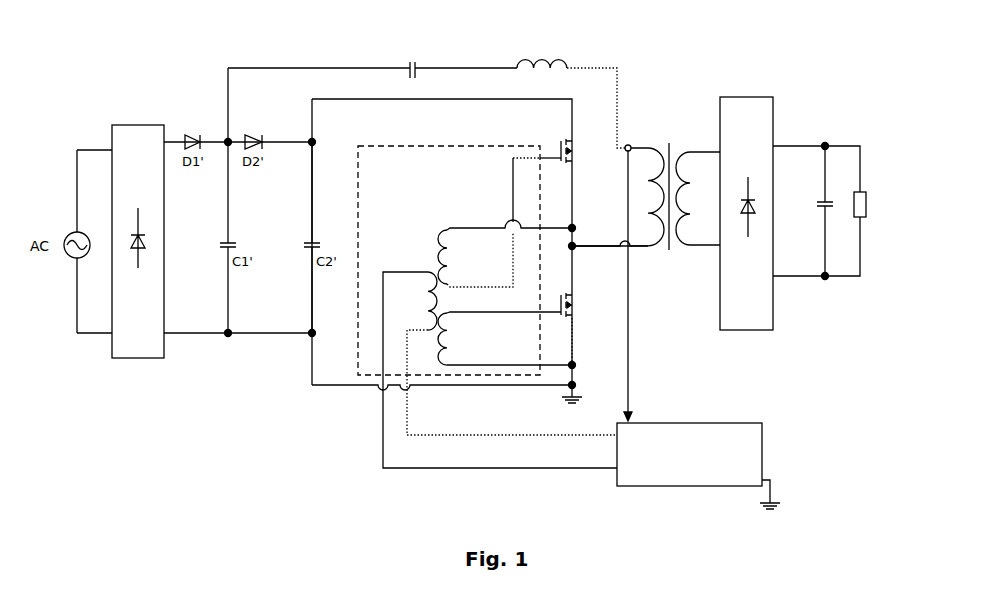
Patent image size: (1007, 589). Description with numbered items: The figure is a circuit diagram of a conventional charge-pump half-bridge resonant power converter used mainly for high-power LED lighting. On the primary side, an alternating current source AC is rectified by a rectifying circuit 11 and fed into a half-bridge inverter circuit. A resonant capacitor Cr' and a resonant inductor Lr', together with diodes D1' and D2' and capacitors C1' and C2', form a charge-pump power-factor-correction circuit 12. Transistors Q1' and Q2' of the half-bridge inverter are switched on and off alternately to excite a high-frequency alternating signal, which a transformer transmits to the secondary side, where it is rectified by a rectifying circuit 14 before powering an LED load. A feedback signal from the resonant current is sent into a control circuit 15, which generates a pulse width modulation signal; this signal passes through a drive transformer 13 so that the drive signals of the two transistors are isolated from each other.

The rectifying circuit 11 is at (150, 123).
The charge-pump power-factor-correction circuit 12 is at (248, 58).
The drive transformer 13 is at (398, 146).
The rectifying circuit 14 is at (748, 97).
The control circuit 15 is at (687, 423).